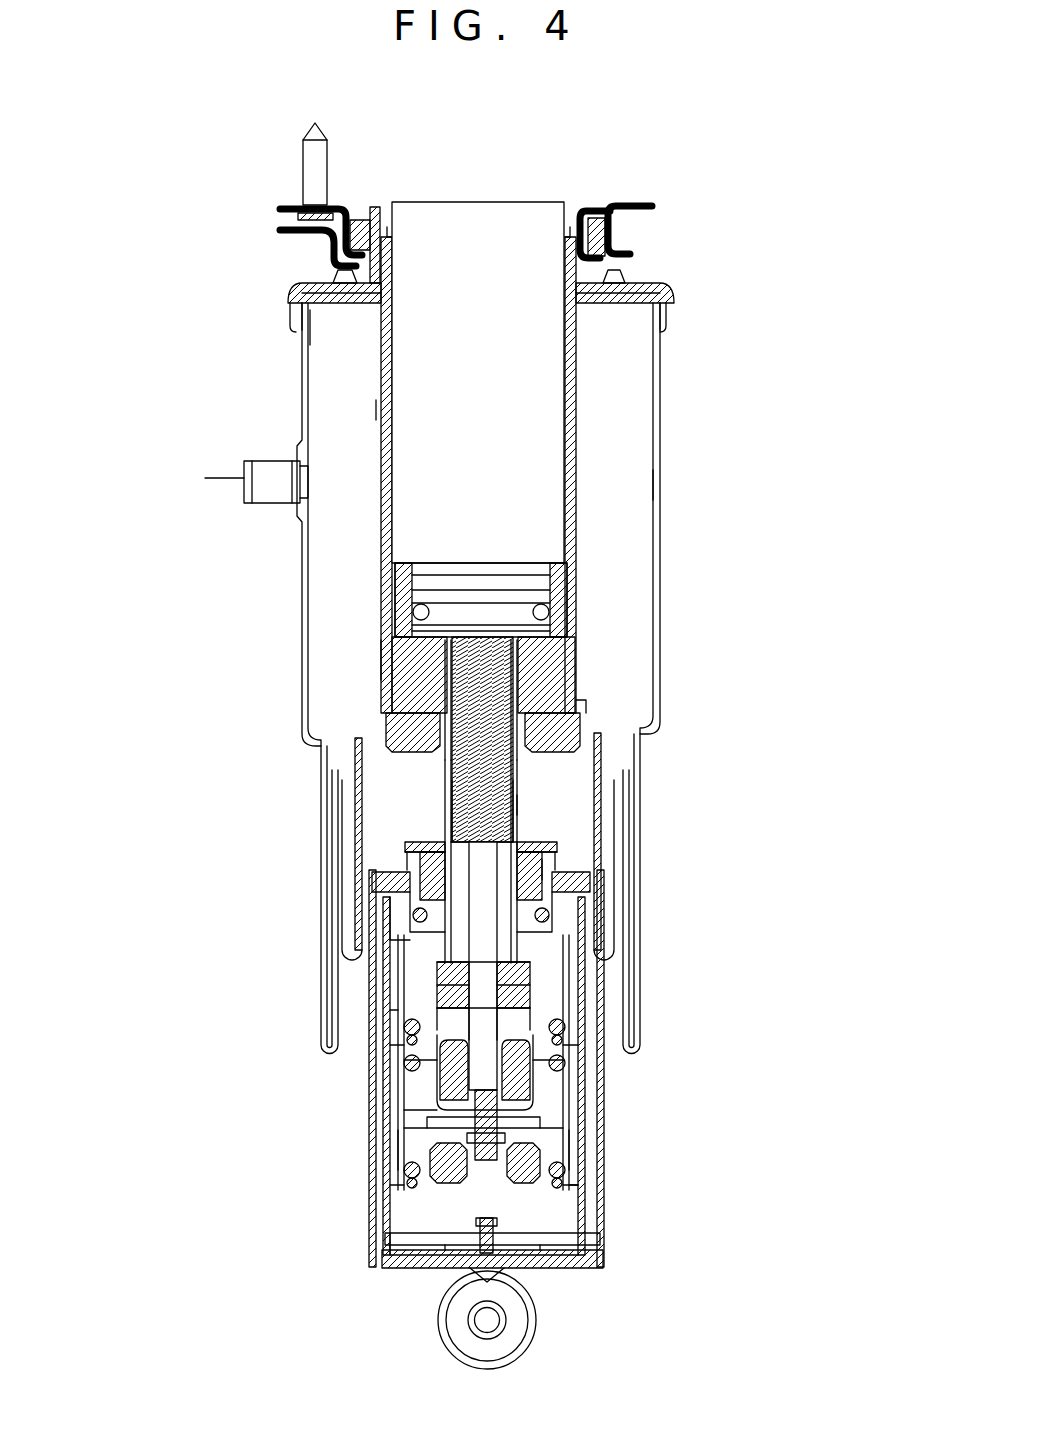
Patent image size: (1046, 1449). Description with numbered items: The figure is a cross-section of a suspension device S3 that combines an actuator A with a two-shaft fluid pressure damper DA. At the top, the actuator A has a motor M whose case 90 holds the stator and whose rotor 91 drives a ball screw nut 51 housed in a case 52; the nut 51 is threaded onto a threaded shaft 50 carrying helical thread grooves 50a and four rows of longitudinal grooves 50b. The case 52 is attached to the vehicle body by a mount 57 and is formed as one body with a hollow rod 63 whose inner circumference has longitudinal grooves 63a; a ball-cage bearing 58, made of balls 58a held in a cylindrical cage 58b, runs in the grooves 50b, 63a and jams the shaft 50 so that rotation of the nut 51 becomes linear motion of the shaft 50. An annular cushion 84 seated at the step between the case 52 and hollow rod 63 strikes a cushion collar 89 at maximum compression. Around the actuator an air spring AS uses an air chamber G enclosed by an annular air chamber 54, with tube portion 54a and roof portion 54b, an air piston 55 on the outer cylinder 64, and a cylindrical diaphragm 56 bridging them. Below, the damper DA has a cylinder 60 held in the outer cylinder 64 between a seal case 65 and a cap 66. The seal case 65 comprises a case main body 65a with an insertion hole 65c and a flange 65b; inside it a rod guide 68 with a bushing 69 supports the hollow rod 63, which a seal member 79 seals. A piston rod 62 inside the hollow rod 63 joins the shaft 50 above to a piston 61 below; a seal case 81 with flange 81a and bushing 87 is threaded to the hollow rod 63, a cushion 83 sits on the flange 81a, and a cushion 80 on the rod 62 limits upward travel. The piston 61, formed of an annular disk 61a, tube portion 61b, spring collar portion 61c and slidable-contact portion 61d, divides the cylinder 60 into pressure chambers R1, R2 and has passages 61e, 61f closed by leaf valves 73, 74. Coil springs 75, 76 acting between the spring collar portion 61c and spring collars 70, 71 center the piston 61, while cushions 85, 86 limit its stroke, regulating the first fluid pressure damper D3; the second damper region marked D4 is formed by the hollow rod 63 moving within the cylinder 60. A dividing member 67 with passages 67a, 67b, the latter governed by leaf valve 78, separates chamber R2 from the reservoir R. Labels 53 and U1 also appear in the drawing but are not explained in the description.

The suspension device S3 is at (660, 238).
The mount 57 is at (620, 207).
The annular air chamber 54 is at (668, 325).
The tube portion 54a is at (660, 355).
The annular roof portion 54b is at (648, 300).
The actuator A is at (376, 352).
The motor M is at (388, 410).
The rotor 91 is at (440, 590).
The case 90 is at (535, 415).
The air spring AS is at (622, 518).
The air chamber G is at (335, 517).
The bearing housing 53 is at (555, 575).
The ball screw nut 51 is at (405, 592).
The case 52 is at (540, 605).
The helical thread grooves 50a is at (428, 665).
The upper unit U1 is at (372, 658).
The threaded shaft 50 is at (505, 662).
The linear longitudinal grooves 50b is at (450, 790).
The longitudinal grooves 63a is at (522, 682).
The hollow rod 63 is at (500, 777).
The fourth damping chamber D4 is at (532, 806).
The annular cushion 84 is at (405, 730).
The air piston 55 is at (385, 745).
The balls 58a is at (580, 702).
The cylindrical diaphragm 56 is at (330, 960).
The cylindrical cage 58b is at (358, 745).
The bearing 58 is at (600, 745).
The annular seal member 79 is at (560, 835).
The insertion hole 65c is at (447, 830).
The cushion collar 89 is at (440, 850).
The case main body 65a is at (400, 850).
The flange 65b is at (445, 865).
The seal case 65 is at (520, 856).
The fluid pressure damper DA is at (372, 880).
The first fluid pressure damper D3 is at (512, 874).
The rod guide 68 is at (425, 900).
The piston rod 62 is at (498, 902).
The spring collar 70 is at (395, 915).
The coil spring 75 is at (548, 920).
The cylindrical bushing 69 is at (432, 930).
The seal case 81 is at (398, 942).
The annular cushion 83 is at (530, 965).
The annular cushion 85 is at (445, 985).
The bushing 87 is at (520, 985).
The pressure chamber R1 is at (372, 1015).
The cylinder 60 is at (540, 1015).
The annular cushion 80 is at (545, 1035).
The slidable-contact portion 61d is at (395, 1035).
The spring collar portion 61c is at (400, 1060).
The coil spring 76 is at (520, 1075).
The passage 61f is at (540, 1140).
The tube portion 61b is at (545, 1090).
The piston 61 is at (580, 1115).
The reservoir R is at (585, 1150).
The flange 81a is at (432, 1108).
The leaf valve 74 is at (478, 1100).
The pressure chamber R2 is at (395, 1150).
The leaf valve 73 is at (430, 1190).
The passage 61e is at (405, 1125).
The spring collar 71 is at (445, 1165).
The annular disk 61a is at (600, 1182).
The outer cylinder 64 is at (604, 1212).
The annular cushion 86 is at (455, 1230).
The dividing member 67 is at (470, 1246).
The cap 66 is at (590, 1262).
The passage 67a is at (545, 1246).
The passage 67b is at (475, 1252).
The leaf valve 78 is at (512, 1278).